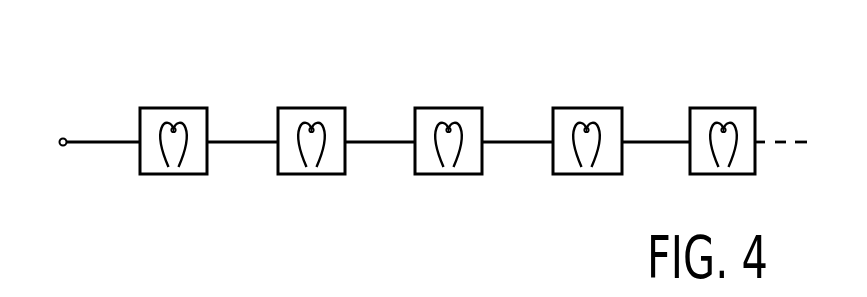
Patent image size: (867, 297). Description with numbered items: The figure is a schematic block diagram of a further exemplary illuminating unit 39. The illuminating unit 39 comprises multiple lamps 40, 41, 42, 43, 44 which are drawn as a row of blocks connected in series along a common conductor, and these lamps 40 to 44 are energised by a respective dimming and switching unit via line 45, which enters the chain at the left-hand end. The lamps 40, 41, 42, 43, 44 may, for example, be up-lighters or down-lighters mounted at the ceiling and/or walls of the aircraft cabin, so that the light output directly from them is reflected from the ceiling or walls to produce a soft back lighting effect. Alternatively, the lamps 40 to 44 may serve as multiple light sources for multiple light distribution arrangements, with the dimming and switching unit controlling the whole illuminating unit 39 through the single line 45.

The illuminating unit 39 is at (421, 157).
The lamp 40 is at (181, 108).
The lamp 41 is at (320, 108).
The lamp 42 is at (458, 108).
The lamp 43 is at (601, 108).
The lamp 44 is at (735, 108).
The line 45 is at (63, 138).